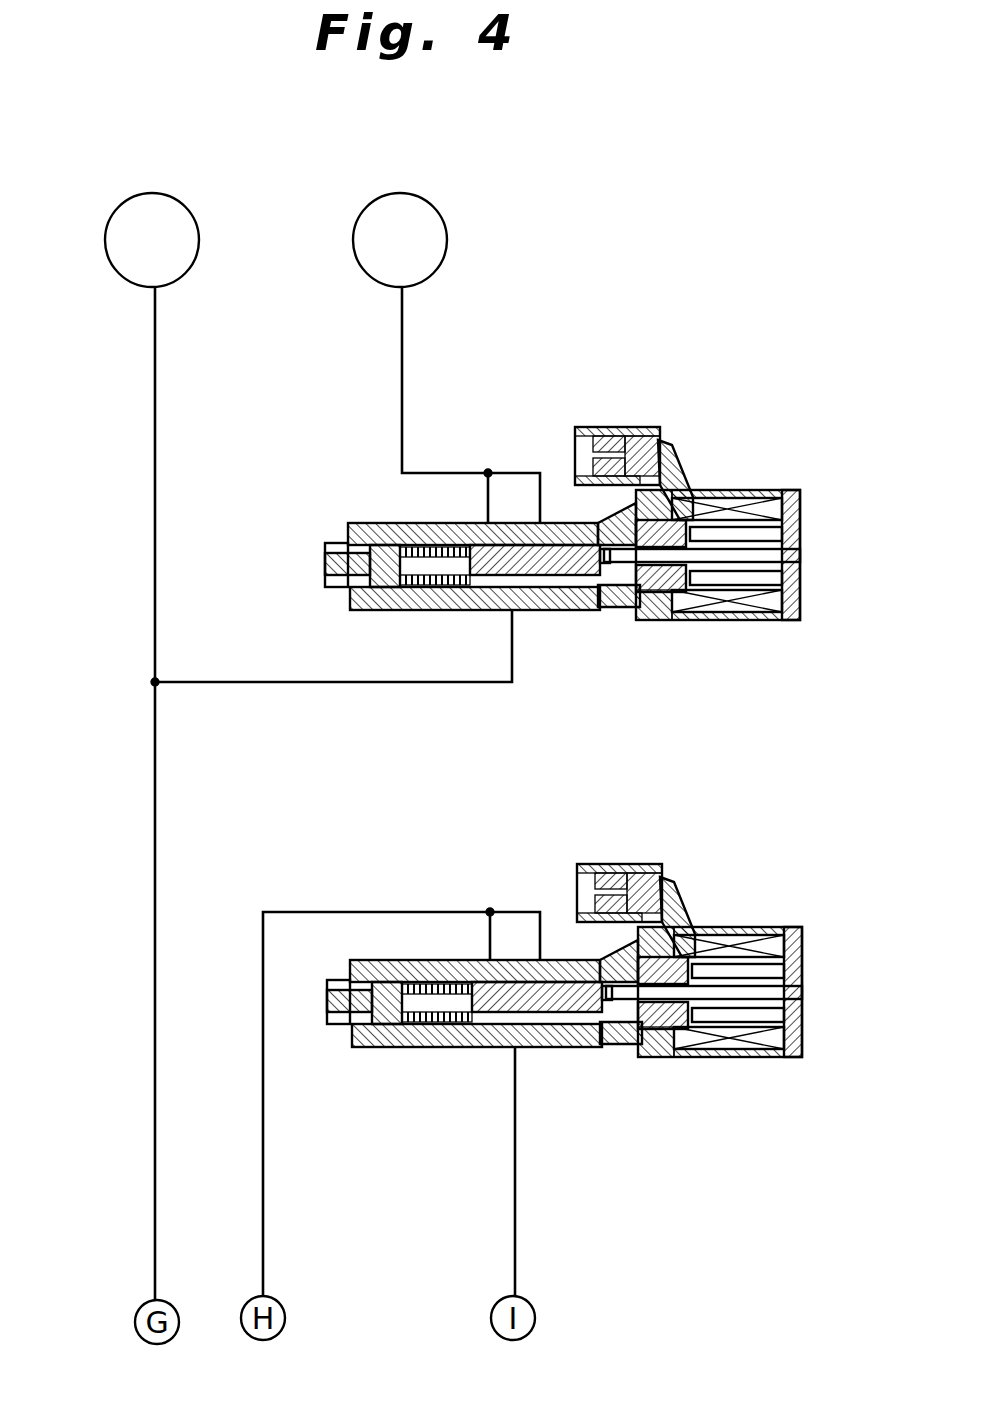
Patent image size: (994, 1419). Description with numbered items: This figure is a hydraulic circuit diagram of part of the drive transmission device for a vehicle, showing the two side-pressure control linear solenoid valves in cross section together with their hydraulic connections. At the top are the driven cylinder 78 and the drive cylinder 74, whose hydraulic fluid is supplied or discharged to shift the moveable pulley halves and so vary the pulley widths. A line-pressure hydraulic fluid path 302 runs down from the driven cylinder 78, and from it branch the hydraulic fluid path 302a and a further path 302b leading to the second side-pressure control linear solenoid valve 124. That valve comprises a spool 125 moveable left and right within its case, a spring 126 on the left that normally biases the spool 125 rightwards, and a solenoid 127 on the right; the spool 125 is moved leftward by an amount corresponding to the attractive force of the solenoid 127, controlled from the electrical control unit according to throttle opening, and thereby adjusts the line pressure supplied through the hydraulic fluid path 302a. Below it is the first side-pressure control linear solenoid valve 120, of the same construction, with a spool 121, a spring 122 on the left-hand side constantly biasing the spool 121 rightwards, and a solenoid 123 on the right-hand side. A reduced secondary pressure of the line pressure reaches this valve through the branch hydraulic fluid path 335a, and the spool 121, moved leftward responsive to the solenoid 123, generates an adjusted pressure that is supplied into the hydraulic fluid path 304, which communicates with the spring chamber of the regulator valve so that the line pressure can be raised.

The driven cylinder 78 is at (127, 260).
The drive cylinder 74 is at (375, 260).
The hydraulic fluid path 302 is at (155, 530).
The hydraulic fluid path 302a is at (330, 684).
The branch passage 302b is at (403, 360).
The hydraulic fluid path 304 is at (265, 1165).
The hydraulic fluid path 335a is at (517, 1212).
The second side-pressure control linear solenoid valve 124 is at (801, 416).
The spool 125 is at (528, 608).
The spring 126 is at (426, 608).
The solenoid 127 is at (768, 620).
The first side-pressure control linear solenoid valve 120 is at (778, 889).
The spool 121 is at (484, 1024).
The spring 122 is at (422, 1045).
The solenoid 123 is at (689, 999).